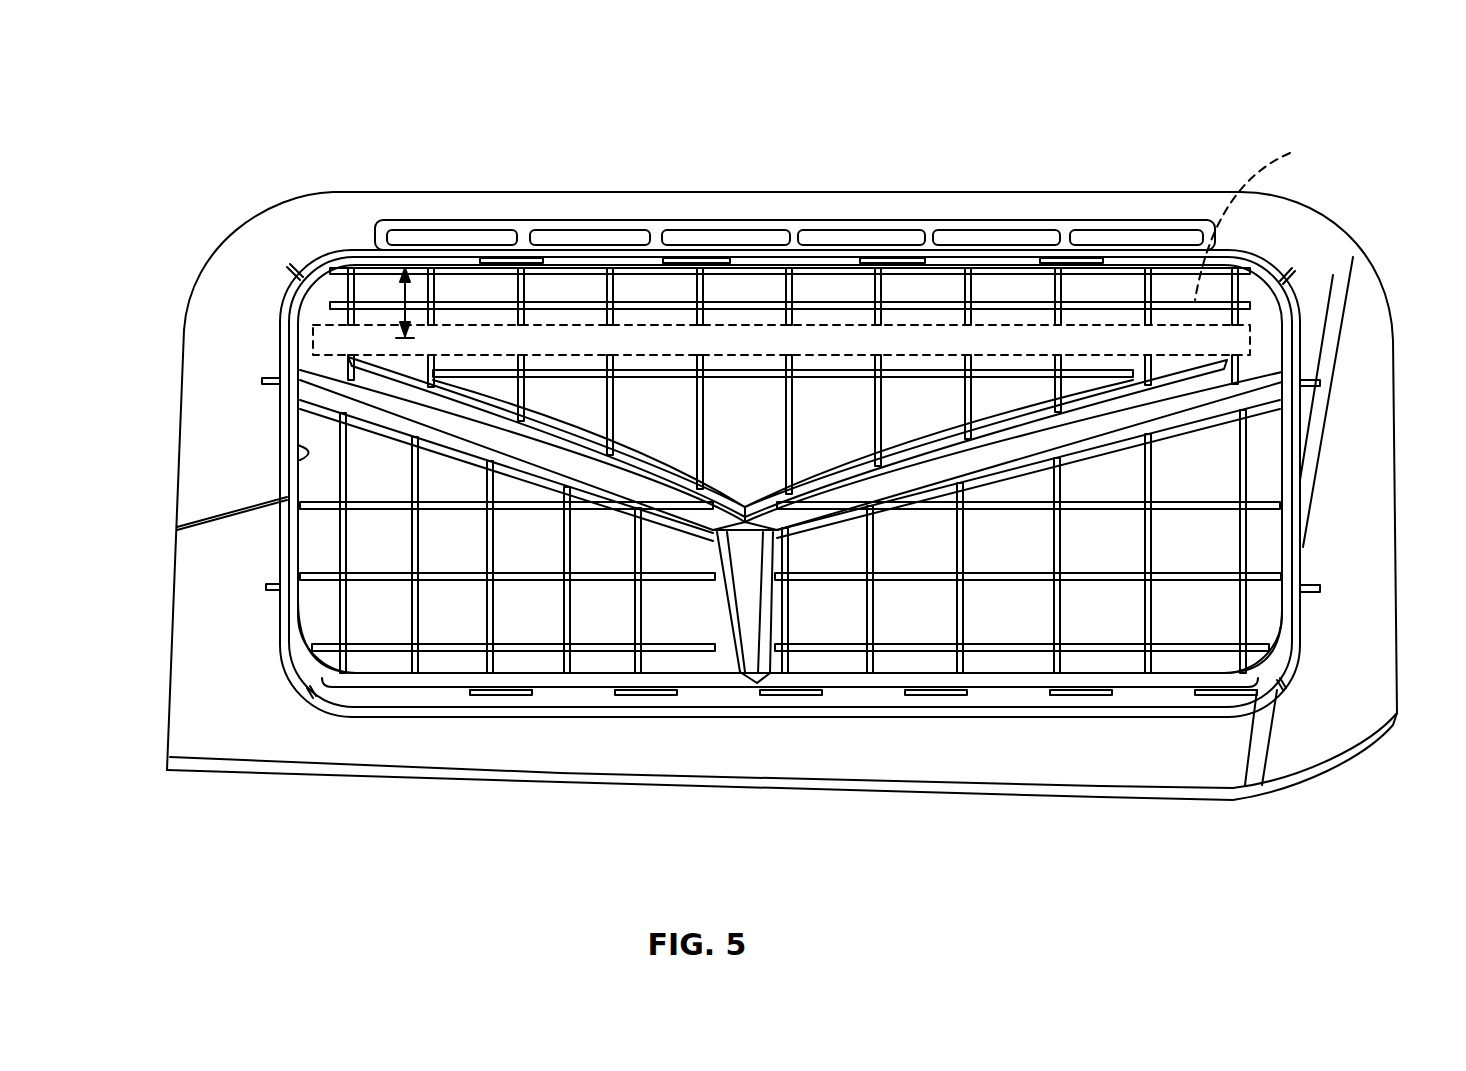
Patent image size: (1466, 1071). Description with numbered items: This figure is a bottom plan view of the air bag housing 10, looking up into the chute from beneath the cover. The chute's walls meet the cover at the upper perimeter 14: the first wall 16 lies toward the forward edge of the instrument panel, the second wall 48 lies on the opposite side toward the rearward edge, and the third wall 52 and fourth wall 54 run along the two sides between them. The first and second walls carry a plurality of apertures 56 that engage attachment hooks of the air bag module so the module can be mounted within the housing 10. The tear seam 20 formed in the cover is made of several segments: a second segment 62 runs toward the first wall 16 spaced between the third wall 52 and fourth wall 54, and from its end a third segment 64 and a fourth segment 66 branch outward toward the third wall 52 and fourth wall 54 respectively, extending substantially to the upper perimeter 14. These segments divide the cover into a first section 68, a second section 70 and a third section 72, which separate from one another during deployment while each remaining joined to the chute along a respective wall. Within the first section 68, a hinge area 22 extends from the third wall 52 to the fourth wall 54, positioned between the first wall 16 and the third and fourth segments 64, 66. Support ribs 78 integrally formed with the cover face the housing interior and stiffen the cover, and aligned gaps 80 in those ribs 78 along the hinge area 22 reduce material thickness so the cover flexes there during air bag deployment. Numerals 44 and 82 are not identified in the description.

The air bag housing 10 is at (1250, 118).
The upper perimeter 14 is at (1230, 282).
The first wall 16 is at (420, 228).
The tear seam 20 is at (784, 502).
The hinge area 22 is at (816, 248).
The frame lip 44 is at (300, 458).
The second wall 48 is at (705, 680).
The third wall 52 is at (1300, 497).
The fourth wall 54 is at (287, 393).
The apertures 56 is at (922, 265).
The second segment 62 is at (765, 683).
The third segment 64 is at (940, 480).
The fourth segment 66 is at (436, 378).
The first section 68 is at (674, 430).
The second section 70 is at (1210, 617).
The third section 72 is at (375, 620).
The support ribs 78 is at (705, 448).
The gaps 80 is at (354, 333).
The gap height 82 is at (432, 333).